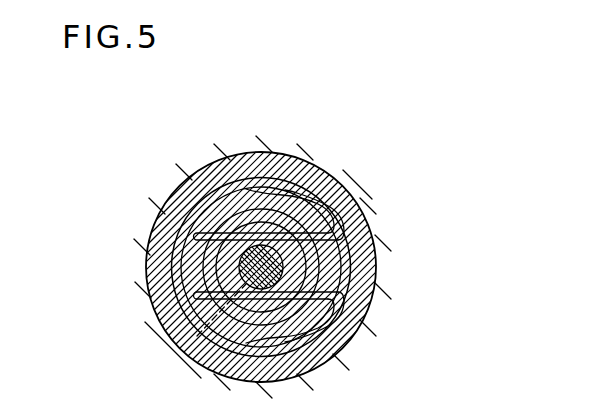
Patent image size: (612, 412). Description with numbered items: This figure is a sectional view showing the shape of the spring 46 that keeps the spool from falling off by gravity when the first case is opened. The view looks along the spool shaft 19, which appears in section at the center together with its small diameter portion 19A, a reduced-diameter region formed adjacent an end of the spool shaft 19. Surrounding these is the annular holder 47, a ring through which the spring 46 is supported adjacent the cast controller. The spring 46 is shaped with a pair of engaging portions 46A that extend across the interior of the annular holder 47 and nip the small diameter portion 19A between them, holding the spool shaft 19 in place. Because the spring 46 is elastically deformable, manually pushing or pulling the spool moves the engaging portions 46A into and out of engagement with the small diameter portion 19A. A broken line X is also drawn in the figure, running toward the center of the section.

The spool shaft 19 is at (240, 228).
The small diameter portion 19A is at (240, 270).
The spring 46 is at (349, 201).
The engaging portions 46A is at (322, 293).
The annular holder 47 is at (340, 318).
The axis line X is at (195, 338).